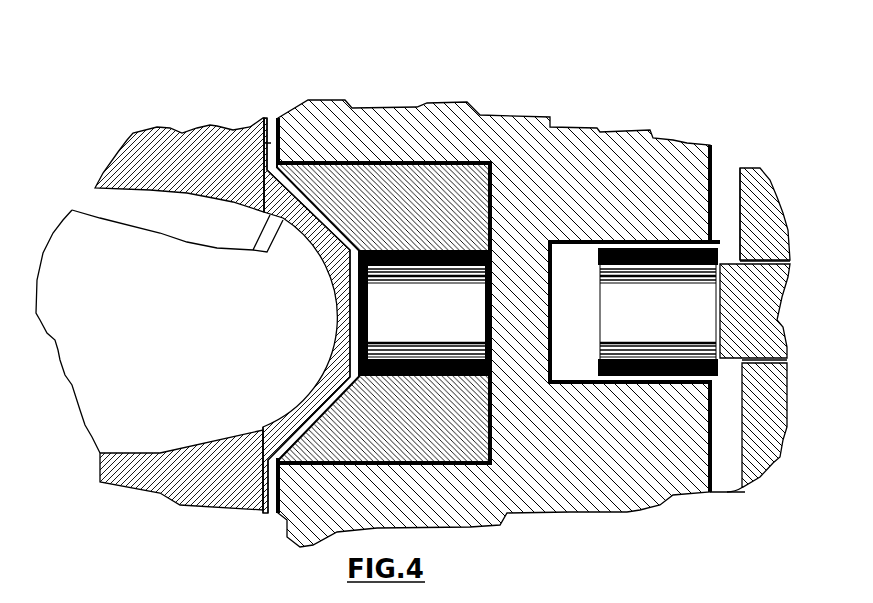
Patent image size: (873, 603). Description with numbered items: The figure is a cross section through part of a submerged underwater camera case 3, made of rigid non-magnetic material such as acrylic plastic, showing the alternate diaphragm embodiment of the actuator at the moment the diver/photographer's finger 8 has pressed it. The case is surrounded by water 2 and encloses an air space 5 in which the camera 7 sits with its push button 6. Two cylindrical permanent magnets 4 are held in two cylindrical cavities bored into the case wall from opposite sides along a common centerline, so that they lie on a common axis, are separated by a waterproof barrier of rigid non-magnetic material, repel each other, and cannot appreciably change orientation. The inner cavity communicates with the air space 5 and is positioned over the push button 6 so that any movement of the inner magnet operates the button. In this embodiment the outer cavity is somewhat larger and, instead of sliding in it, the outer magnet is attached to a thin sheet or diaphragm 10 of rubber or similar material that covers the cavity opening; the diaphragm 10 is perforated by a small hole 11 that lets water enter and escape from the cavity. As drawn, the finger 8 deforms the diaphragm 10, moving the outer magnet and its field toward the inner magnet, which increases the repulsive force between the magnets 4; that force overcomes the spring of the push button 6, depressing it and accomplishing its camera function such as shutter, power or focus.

The water 2 is at (172, 157).
The underwater camera case 3 is at (325, 133).
The cylindrical permanent magnets 4 is at (415, 250).
The air space 5 is at (717, 180).
The push button 6 is at (732, 257).
The camera 7 is at (770, 217).
The diver/photographer's finger 8 is at (72, 283).
The diaphragm 10 is at (268, 182).
The hole 11 is at (265, 200).